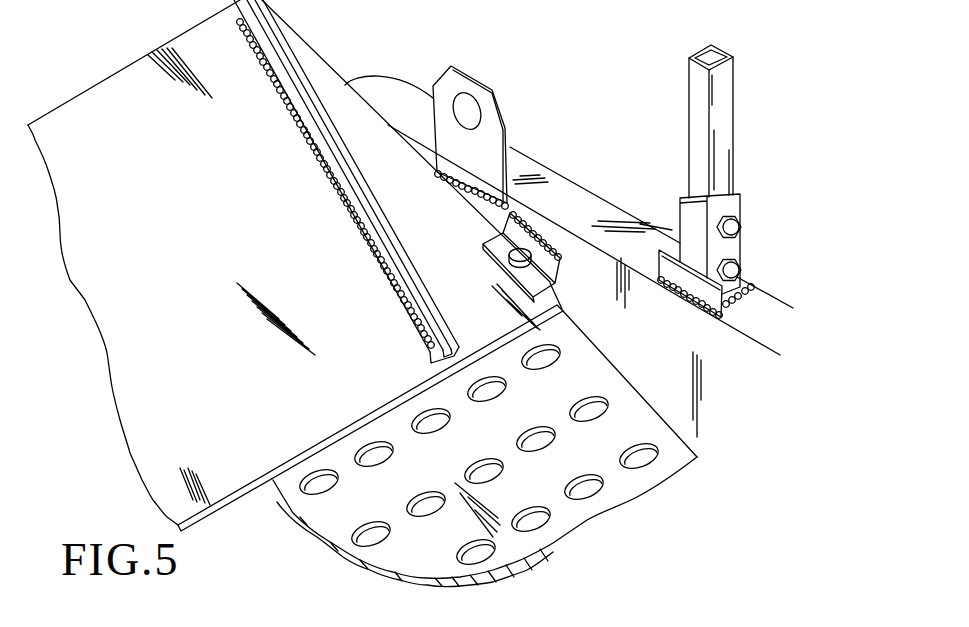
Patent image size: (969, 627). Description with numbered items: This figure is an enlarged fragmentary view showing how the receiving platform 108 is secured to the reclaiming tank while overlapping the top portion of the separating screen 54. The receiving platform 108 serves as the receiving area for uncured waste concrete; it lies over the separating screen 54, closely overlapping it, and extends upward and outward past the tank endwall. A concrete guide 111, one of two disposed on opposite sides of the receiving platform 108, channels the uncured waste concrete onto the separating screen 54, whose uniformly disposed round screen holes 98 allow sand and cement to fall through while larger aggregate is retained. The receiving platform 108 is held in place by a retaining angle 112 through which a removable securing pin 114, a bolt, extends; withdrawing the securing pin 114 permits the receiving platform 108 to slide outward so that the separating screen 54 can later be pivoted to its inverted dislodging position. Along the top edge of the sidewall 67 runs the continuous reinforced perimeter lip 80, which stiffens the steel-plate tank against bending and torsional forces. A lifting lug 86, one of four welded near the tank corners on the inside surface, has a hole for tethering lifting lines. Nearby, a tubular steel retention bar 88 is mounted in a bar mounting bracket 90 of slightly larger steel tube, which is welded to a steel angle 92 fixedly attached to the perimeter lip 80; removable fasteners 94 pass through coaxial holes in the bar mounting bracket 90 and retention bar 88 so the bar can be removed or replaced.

The receiving platform 108 is at (120, 72).
The concrete guide 111 is at (311, 143).
The lifting lug 86 is at (493, 89).
The perimeter lip 80 is at (598, 193).
The retention bar 88 is at (733, 95).
The removable fasteners 94 is at (741, 220).
The bar mounting bracket 90 is at (746, 245).
The steel angle 92 is at (755, 291).
The sidewall 67 is at (737, 362).
The separating screen 54 is at (697, 457).
The round screen holes 98 is at (598, 496).
The retaining angle 112 is at (562, 262).
The securing pin 114 is at (513, 274).